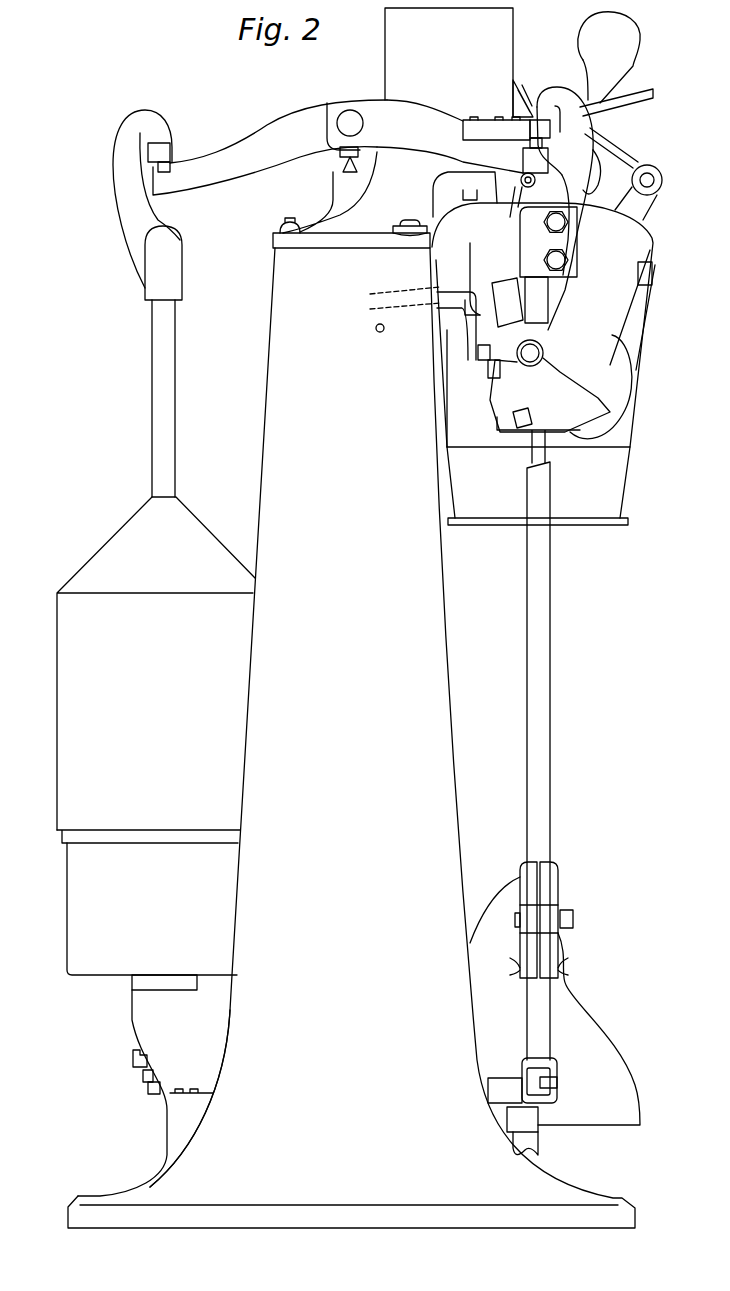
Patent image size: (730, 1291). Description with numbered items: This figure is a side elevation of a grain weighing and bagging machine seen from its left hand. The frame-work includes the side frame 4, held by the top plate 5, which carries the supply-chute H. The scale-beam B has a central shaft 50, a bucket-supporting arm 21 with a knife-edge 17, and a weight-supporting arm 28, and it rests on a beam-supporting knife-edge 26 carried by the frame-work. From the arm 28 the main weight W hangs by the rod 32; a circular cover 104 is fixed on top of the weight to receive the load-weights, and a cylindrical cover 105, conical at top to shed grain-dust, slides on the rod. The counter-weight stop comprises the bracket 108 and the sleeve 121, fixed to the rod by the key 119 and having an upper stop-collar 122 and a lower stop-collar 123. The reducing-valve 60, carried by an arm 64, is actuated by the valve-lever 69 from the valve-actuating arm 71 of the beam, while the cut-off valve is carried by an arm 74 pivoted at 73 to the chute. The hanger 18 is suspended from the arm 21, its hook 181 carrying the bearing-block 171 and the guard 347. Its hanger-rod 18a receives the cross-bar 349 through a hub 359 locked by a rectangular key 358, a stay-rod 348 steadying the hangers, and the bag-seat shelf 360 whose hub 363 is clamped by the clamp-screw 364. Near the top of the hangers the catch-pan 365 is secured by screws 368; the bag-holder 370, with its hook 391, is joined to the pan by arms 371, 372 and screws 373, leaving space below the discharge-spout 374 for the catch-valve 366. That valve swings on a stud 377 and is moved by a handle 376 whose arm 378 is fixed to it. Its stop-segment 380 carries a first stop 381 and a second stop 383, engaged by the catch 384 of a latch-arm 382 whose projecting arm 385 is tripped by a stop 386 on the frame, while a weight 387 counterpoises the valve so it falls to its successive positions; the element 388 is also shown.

The side frame 4 is at (437, 630).
The top plate 5 is at (273, 239).
The cylindrical cover 105 is at (67, 665).
The circular cover 104 is at (62, 838).
The main weight W is at (68, 896).
The upper stop-collar 122 is at (185, 984).
The bracket 108 is at (190, 1008).
The lower stop-collar 123 is at (133, 1058).
The key 119 is at (143, 1079).
The sleeve 121 is at (150, 1094).
The rod 32 is at (162, 378).
The weight-supporting arm 28 is at (234, 153).
The scale-beam B is at (376, 105).
The bucket-supporting arm 21 is at (425, 122).
The central shaft 50 is at (345, 101).
The beam-supporting knife-edge 26 is at (344, 166).
The supply-chute H is at (392, 60).
The bearing-block 171 is at (527, 130).
The guard 347 is at (530, 120).
The knife-edge 17 is at (530, 145).
The arm of cut-off valve 74 is at (498, 193).
The pivot 73 is at (524, 190).
The screws 368 is at (568, 260).
The hook of hanger 181 is at (552, 100).
The hanger 18 is at (580, 170).
The valve-lever 69 is at (622, 31).
The valve-actuating arm 71 is at (647, 96).
The arm of reducing-valve 64 is at (600, 136).
The arm of handle 378 is at (638, 203).
The handle 376 is at (660, 193).
The reducing-valve 60 is at (608, 194).
The bag-holder 370 is at (603, 484).
The hook 391 is at (628, 504).
The catch-pan 365 is at (482, 286).
The arm of bag-holder 371 is at (620, 332).
The screws 373 is at (647, 273).
The catch-valve 366 is at (617, 388).
The stud 377 is at (549, 356).
The stop-segment 380 is at (530, 390).
The discharge-spout 374 is at (507, 417).
The second stop 383 is at (523, 421).
The weight 387 is at (512, 292).
The projecting arm 385 is at (450, 297).
The latch-arm 382 is at (480, 323).
The arm of bag-holder 372 is at (478, 349).
The stop 386 is at (376, 328).
The catch 384 is at (490, 357).
The first stop 381 is at (493, 368).
The wall 388 is at (520, 373).
The hanger-rod 18a is at (542, 690).
The hub 363 is at (548, 885).
The clamp-screw 364 is at (576, 917).
The shelf 360 is at (608, 1127).
The hub of cross-bar 359 is at (553, 1063).
The rectangular key 358 is at (557, 1083).
The stay-rod 348 is at (505, 1095).
The cross-bar 349 is at (527, 1120).